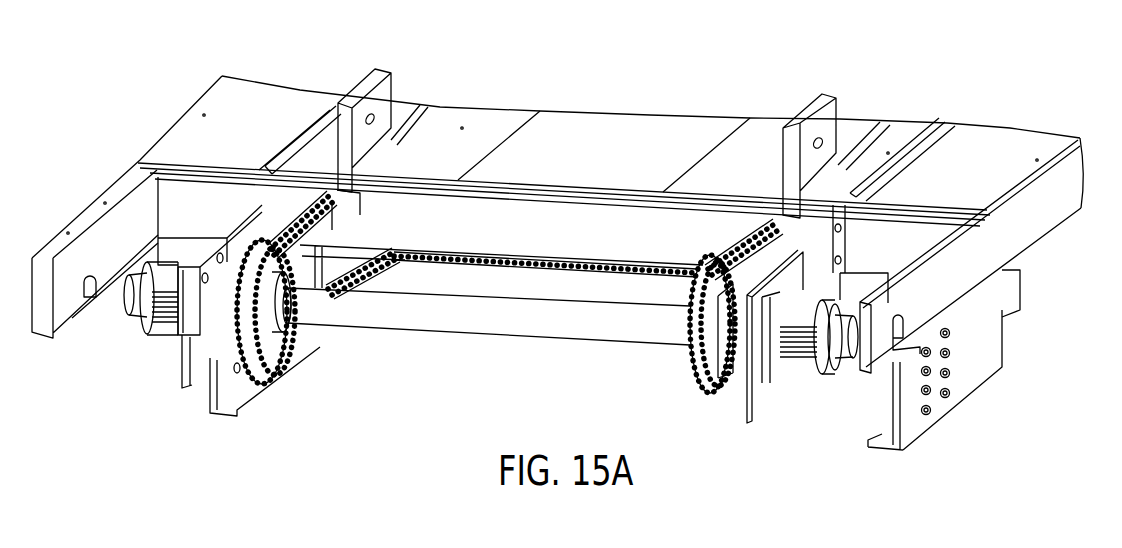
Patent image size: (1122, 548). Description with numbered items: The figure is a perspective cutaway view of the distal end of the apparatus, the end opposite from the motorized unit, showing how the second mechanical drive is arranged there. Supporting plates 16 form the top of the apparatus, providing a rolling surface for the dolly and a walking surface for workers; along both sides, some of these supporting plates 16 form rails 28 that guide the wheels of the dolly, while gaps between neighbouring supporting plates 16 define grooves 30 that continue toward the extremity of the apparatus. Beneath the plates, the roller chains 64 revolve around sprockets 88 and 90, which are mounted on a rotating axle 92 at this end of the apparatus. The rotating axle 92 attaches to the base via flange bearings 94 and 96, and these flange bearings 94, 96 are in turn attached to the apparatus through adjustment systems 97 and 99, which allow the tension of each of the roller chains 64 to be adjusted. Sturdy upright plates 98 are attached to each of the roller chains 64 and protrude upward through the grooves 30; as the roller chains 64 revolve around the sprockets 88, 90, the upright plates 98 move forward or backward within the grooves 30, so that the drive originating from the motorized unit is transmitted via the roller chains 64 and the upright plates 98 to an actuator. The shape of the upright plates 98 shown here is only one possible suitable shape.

The supporting plates 16 is at (255, 100).
The rails 28 is at (322, 122).
The grooves 30 is at (418, 108).
The roller chains 64 is at (290, 200).
The sprocket 88 is at (280, 360).
The sprocket 90 is at (690, 365).
The rotating axle 92 is at (385, 325).
The flange bearing 94 is at (147, 318).
The flange bearing 96 is at (810, 378).
The adjustment system 97 is at (218, 242).
The upright plates 98 is at (358, 95).
The adjustment system 99 is at (722, 385).